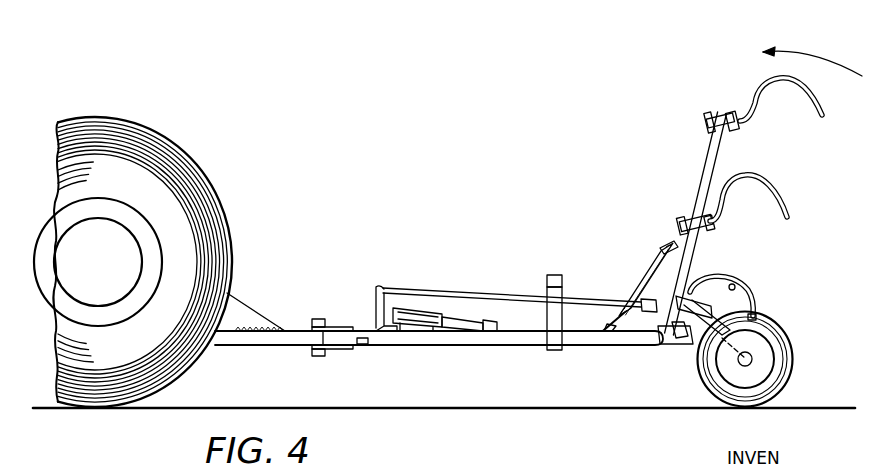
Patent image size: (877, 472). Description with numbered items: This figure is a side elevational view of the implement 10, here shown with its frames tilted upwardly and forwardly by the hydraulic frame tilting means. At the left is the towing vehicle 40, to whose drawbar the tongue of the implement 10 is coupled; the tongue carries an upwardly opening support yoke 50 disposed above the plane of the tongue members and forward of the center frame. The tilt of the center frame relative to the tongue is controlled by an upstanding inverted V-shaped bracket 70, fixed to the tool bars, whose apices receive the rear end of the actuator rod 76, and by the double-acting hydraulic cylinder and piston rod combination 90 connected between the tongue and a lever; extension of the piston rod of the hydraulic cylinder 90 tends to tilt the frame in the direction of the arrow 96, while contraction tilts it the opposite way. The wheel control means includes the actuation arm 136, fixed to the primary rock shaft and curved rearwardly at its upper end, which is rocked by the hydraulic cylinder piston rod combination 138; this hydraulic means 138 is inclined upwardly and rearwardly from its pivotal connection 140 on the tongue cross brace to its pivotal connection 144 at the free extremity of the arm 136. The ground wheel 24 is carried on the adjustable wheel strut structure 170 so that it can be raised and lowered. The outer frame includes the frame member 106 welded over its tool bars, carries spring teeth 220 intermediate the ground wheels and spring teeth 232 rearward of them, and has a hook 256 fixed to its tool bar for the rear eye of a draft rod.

The implement 10 is at (558, 190).
The ground wheel 24 is at (787, 345).
The towing vehicle 40 is at (194, 147).
The support yoke 50 is at (554, 283).
The inverted V-shaped bracket 70 is at (652, 262).
The actuator rod 76 is at (505, 290).
The hydraulic cylinder and piston rod combination 90 is at (426, 301).
The arrow 96 is at (805, 54).
The frame member 106 is at (714, 129).
The actuation arm 136 is at (690, 276).
The hydraulic cylinder piston rod combination 138 is at (633, 290).
The pivotal connection 140 is at (600, 340).
The pivotal connection 144 is at (663, 254).
The wheel strut structure 170 is at (713, 298).
The spring teeth 220 is at (757, 182).
The spring teeth 232 is at (805, 94).
The hook 256 is at (684, 339).